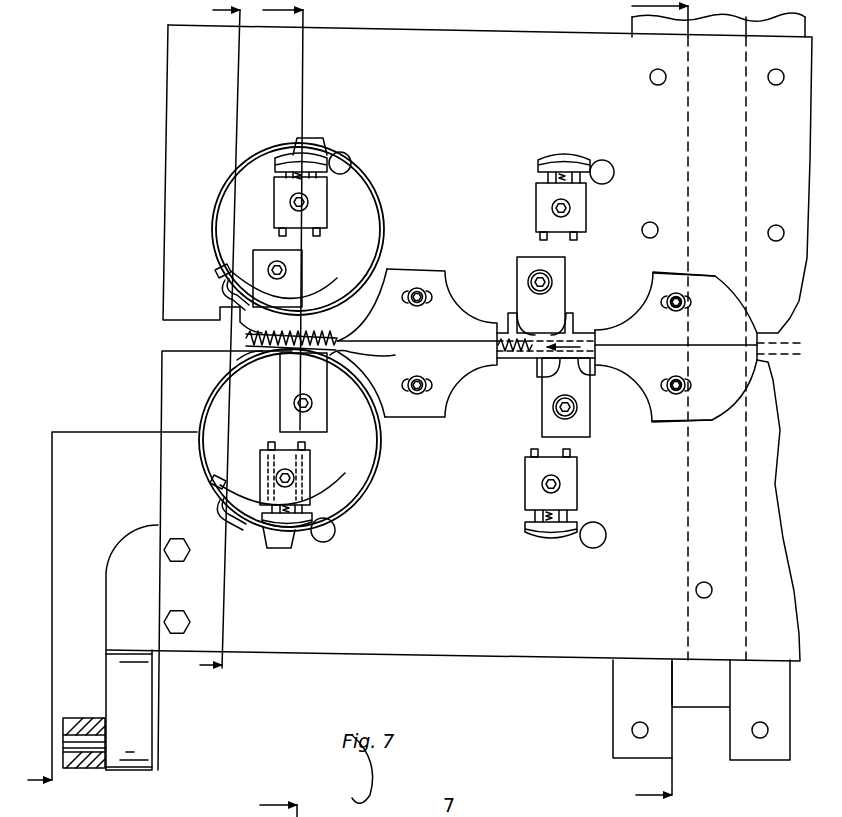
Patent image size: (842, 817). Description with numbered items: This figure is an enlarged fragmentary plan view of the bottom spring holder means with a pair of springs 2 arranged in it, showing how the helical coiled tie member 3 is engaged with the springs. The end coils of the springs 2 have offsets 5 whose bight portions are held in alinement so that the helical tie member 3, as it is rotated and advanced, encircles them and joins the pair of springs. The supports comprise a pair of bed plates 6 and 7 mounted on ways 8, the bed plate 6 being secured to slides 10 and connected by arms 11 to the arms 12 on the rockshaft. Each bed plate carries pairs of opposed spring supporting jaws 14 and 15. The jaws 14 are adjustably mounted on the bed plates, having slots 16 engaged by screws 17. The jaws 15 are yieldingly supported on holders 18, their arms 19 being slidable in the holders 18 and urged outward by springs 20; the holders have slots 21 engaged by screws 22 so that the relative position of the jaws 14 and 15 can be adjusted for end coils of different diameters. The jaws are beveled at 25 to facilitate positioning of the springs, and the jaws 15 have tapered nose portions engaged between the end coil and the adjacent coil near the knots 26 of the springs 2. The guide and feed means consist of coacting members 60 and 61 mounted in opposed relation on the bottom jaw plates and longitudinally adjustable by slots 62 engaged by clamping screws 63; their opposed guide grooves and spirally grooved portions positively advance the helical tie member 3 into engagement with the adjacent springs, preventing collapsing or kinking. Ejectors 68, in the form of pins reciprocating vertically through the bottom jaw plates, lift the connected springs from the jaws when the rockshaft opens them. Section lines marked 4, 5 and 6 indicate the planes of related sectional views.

The springs 2 is at (385, 216).
The helical coiled tie member 3 is at (250, 338).
The section line 4- 4 is at (646, 408).
The offsets 5 is at (313, 133).
The bed plate 6 is at (352, 672).
The bed plate 7 is at (182, 222).
The ways 8 is at (745, 680).
The slides 10 is at (687, 694).
The arms 11 is at (145, 690).
The arms 12 is at (80, 770).
The jaw 14 is at (298, 275).
The jaw 15 is at (313, 155).
The slots 16 is at (547, 272).
The screws 17 is at (553, 285).
The holders 18 is at (320, 222).
The arms 19 is at (280, 233).
The springs 20 is at (297, 167).
The slots 21 is at (280, 463).
The screws 22 is at (280, 477).
The bevel 25 is at (508, 323).
The knots 26 is at (222, 275).
The guide and feed member 60 is at (690, 278).
The guide and feed member 61 is at (658, 412).
The slots 62 is at (697, 305).
The clamping screws 63 is at (680, 378).
The ejectors 68 is at (351, 161).